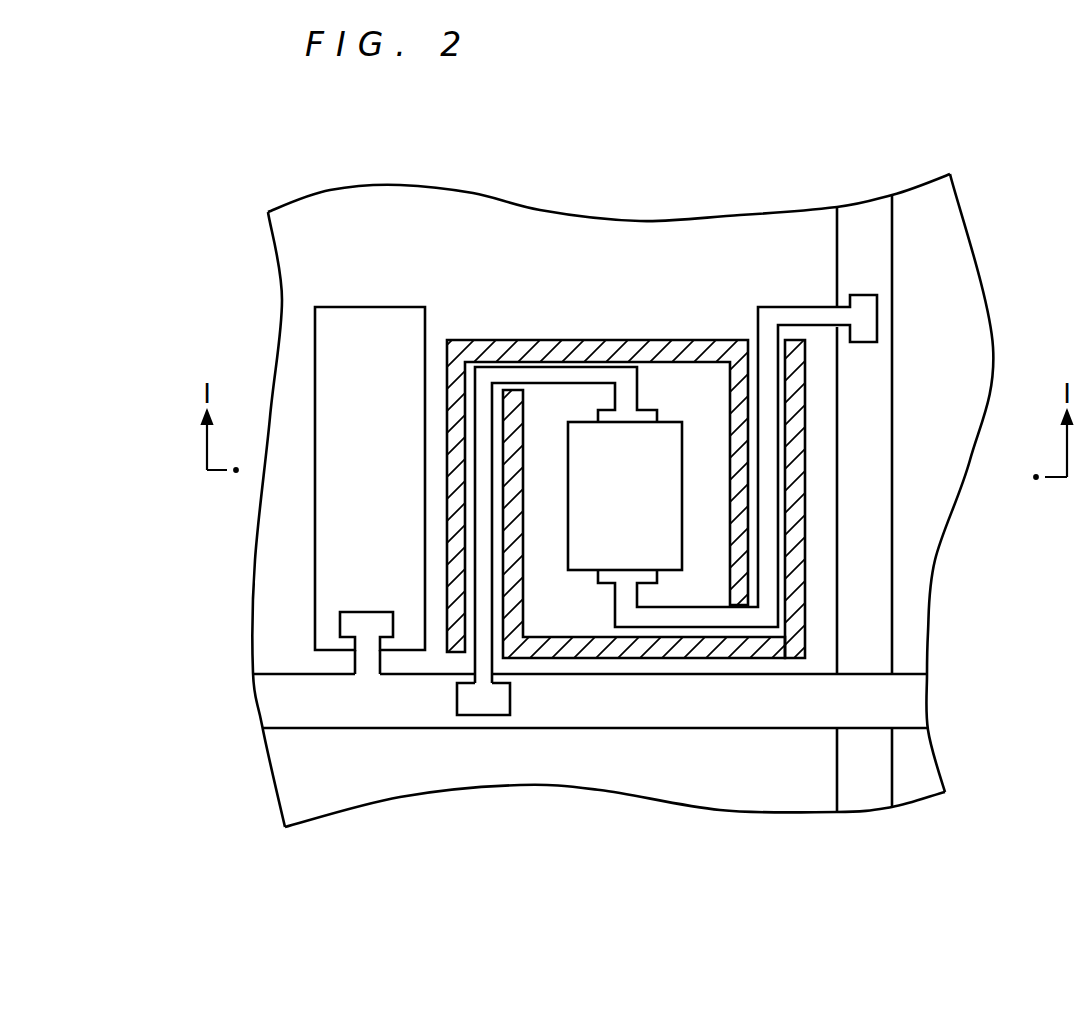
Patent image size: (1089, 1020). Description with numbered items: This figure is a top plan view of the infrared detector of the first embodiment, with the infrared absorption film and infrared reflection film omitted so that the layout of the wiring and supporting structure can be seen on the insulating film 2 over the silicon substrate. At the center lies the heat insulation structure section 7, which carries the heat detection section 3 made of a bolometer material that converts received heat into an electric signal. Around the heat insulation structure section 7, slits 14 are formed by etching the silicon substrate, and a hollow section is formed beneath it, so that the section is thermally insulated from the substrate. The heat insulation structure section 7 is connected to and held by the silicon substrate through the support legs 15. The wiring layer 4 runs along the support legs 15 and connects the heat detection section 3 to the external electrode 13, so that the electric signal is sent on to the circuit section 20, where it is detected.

The insulating film 2 is at (328, 783).
The heat detection section 3 is at (578, 420).
The wiring layer 4 is at (773, 307).
The heat insulation structure section 7 is at (573, 613).
The external electrode 13 is at (867, 597).
The slits 14 is at (673, 362).
The support legs 15 is at (783, 528).
The circuit section 20 is at (372, 307).